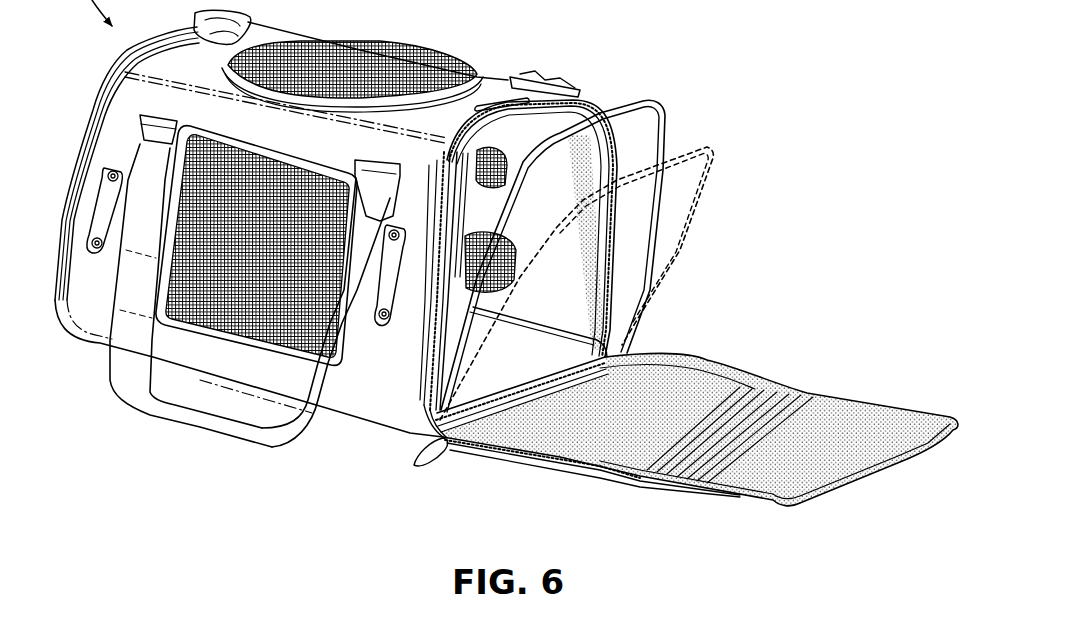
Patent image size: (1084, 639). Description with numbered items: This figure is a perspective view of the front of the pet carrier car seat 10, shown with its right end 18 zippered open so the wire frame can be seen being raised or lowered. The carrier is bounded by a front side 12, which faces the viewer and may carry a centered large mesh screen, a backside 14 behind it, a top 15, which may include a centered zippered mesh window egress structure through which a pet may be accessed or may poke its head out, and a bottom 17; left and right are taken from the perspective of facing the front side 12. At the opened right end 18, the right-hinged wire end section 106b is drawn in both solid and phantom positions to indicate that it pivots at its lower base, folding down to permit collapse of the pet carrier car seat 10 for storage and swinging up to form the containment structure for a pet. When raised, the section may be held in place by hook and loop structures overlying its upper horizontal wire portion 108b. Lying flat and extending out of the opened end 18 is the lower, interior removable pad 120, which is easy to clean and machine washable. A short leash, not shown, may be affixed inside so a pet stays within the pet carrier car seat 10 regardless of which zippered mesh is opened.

The pet carrier car seat 10 is at (804, 116).
The front side 12 is at (117, 130).
The backside 14 is at (554, 51).
The top 15 is at (201, 75).
The bottom 17 is at (543, 368).
The right end 18 is at (708, 259).
The right-hinged wire end section 106b is at (668, 130).
The upper horizontal wire portion 108b is at (655, 99).
The removable pad 120 is at (858, 398).